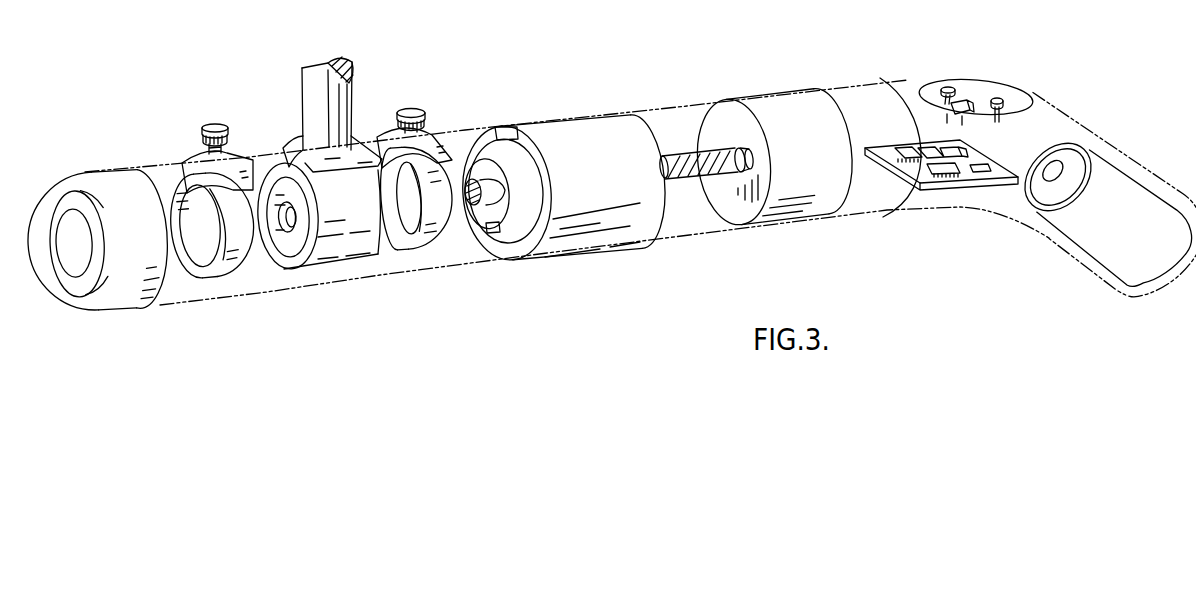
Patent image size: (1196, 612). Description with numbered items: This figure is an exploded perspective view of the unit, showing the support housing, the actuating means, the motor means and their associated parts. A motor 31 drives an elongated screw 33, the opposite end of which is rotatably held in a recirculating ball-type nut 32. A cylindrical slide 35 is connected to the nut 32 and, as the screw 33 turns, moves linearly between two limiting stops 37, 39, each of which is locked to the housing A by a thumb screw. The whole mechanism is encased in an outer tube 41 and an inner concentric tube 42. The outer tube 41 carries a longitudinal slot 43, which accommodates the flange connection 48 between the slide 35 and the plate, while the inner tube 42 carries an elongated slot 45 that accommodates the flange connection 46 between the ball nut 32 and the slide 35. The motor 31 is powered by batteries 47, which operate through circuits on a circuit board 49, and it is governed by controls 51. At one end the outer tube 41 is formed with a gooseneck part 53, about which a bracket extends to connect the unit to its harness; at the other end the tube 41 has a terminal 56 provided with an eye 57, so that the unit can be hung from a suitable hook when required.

The motor 31 is at (780, 117).
The recirculating ball-type nut 32 is at (294, 246).
The elongated screw 33 is at (692, 152).
The cylindrical slide 35 is at (319, 200).
The limiting stop 37 is at (202, 277).
The limiting stop 39 is at (425, 246).
The outer tube 41 is at (559, 189).
The inner concentric tube 42 is at (559, 189).
The longitudinal slot 43 is at (506, 128).
The elongated slot 45 is at (495, 232).
The flange connection 46 is at (292, 248).
The batteries 47 is at (1091, 244).
The flange connection 48 is at (286, 148).
The circuit board 49 is at (949, 180).
The controls 51 is at (967, 96).
The gooseneck part 53 is at (1099, 204).
The terminal 56 is at (105, 273).
The eye 57 is at (97, 239).
The housing A is at (559, 189).